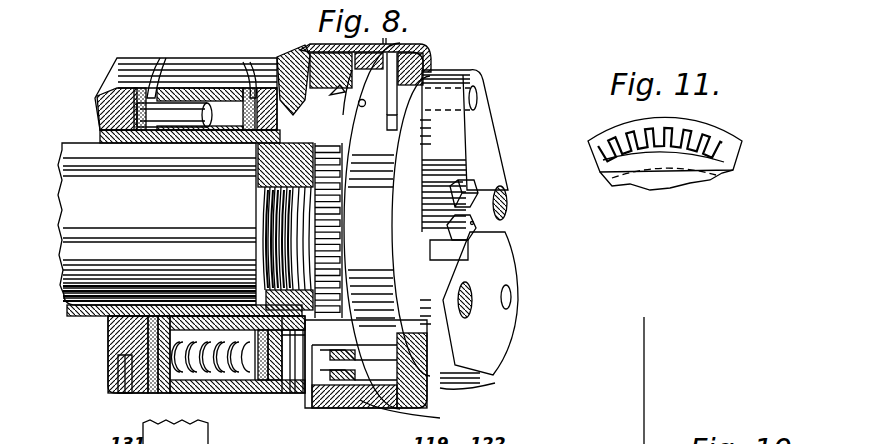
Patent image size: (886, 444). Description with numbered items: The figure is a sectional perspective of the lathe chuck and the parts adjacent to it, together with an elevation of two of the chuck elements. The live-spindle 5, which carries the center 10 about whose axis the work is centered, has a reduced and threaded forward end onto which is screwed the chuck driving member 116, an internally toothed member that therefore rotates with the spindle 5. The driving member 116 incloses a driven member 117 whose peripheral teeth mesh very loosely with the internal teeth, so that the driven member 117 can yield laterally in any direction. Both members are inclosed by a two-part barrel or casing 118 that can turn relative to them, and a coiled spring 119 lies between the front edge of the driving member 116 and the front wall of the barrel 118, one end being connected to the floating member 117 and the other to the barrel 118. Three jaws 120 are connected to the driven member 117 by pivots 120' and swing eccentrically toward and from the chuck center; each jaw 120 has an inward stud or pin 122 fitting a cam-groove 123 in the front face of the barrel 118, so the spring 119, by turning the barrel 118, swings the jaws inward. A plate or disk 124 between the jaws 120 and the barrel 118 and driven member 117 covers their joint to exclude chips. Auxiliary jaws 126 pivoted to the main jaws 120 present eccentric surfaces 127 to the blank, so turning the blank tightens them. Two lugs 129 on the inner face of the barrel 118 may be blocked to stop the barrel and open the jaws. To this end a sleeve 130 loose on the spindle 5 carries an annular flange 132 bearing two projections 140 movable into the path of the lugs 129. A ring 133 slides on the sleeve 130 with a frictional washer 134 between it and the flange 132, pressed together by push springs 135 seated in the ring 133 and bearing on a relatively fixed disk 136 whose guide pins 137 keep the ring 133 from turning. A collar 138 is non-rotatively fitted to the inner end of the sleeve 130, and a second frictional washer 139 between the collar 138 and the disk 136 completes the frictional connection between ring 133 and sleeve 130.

In FIG. 8, the live-spindle 5 is at (157, 224).
In FIG. 8, the center 10 is at (470, 240).
In FIG. 8, the chuck driving member 116 is at (340, 400).
In FIG. 11, the chuck driving member 116 is at (716, 138).
In FIG. 8, the driven member 117 is at (280, 220).
In FIG. 11, the driven member 117 is at (718, 173).
In FIG. 8, the barrel or casing 118 is at (440, 418).
In FIG. 8, the coiled spring 119 is at (422, 68).
In FIG. 8, the jaws 120 is at (509, 226).
In FIG. 8, the pivots 120' is at (533, 273).
In FIG. 8, the stud or pin 122 is at (473, 100).
In FIG. 8, the cam-groove 123 is at (420, 135).
In FIG. 8, the plate or disk 124 is at (495, 383).
In FIG. 8, the auxiliary jaws 126 is at (473, 193).
In FIG. 8, the eccentric surfaces 127 is at (473, 270).
In FIG. 8, the projections or lugs 129 is at (303, 383).
In FIG. 8, the sleeve 130 is at (163, 147).
In FIG. 8, the annular flange 132 is at (275, 80).
In FIG. 8, the ring 133 is at (186, 94).
In FIG. 8, the washer 134 is at (220, 443).
In FIG. 8, the push springs 135 is at (203, 382).
In FIG. 8, the disk 136 is at (152, 110).
In FIG. 8, the guide pins 137 is at (183, 140).
In FIG. 8, the collar 138 is at (110, 347).
In FIG. 8, the washer 139 is at (148, 390).
In FIG. 8, the projections 140 is at (290, 380).